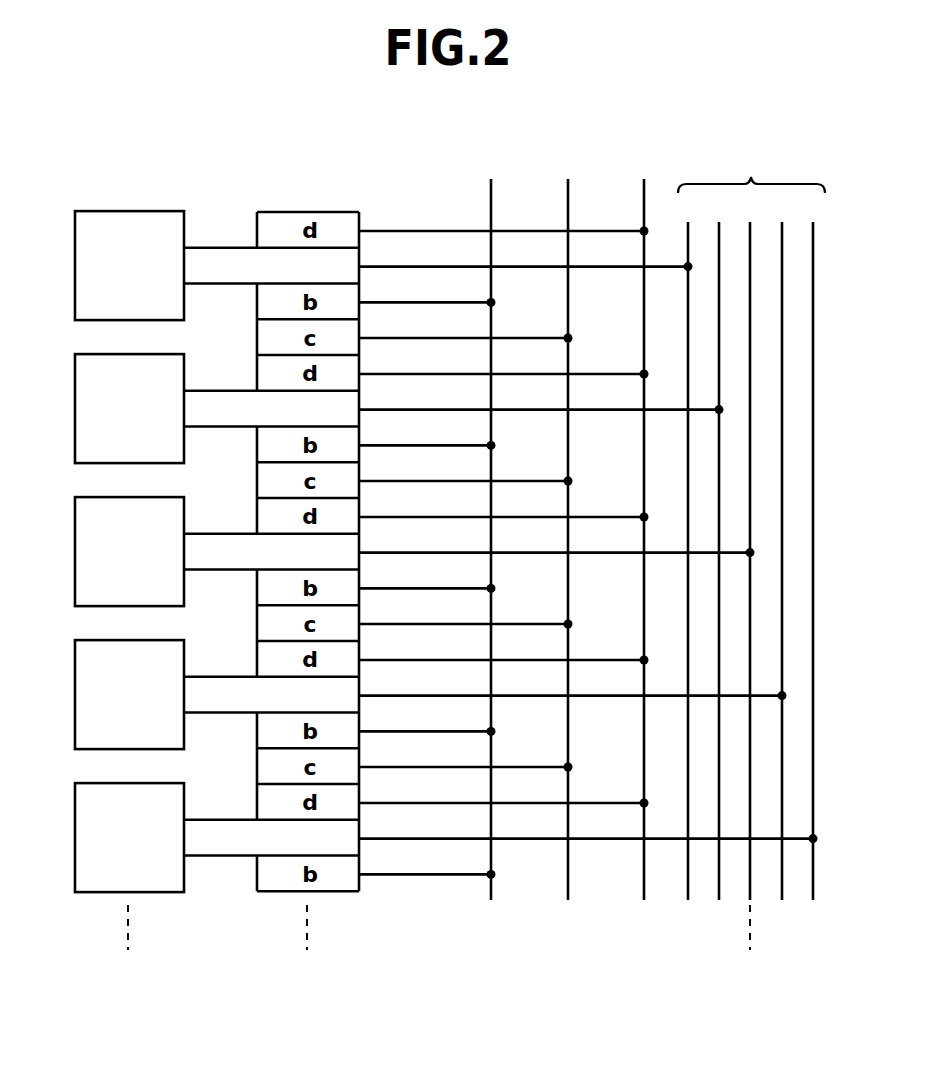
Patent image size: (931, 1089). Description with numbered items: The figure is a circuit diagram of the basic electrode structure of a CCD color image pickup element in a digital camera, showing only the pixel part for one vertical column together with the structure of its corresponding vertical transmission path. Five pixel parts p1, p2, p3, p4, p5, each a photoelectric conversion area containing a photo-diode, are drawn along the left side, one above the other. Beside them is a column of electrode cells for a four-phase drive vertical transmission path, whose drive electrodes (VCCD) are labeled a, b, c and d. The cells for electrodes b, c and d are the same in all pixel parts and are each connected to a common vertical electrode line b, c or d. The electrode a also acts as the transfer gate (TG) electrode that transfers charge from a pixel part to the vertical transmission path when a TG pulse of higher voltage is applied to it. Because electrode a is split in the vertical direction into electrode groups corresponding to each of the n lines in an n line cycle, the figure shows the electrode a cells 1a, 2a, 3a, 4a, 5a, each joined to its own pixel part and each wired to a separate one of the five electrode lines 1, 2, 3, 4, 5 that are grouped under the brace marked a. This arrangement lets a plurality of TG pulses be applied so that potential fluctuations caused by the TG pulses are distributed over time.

The pixel part p1 is at (129, 265).
The pixel part p2 is at (129, 408).
The pixel part p3 is at (129, 551).
The pixel part p4 is at (129, 694).
The pixel part p5 is at (129, 837).
The register cell 1a is at (438, 266).
The register cell 2a is at (454, 409).
The register cell 3a is at (469, 552).
The register cell 4a is at (485, 695).
The register cell 5a is at (501, 838).
The drive electrode a is at (751, 172).
The drive electrode b is at (491, 525).
The drive electrode c is at (567, 525).
The drive electrode d is at (644, 525).
The signal line 1 is at (688, 547).
The signal line 2 is at (719, 547).
The signal line 3 is at (750, 547).
The signal line 4 is at (782, 547).
The signal line 5 is at (813, 547).